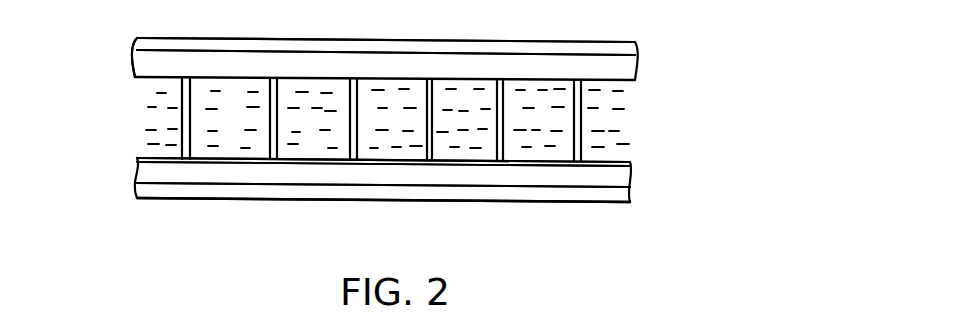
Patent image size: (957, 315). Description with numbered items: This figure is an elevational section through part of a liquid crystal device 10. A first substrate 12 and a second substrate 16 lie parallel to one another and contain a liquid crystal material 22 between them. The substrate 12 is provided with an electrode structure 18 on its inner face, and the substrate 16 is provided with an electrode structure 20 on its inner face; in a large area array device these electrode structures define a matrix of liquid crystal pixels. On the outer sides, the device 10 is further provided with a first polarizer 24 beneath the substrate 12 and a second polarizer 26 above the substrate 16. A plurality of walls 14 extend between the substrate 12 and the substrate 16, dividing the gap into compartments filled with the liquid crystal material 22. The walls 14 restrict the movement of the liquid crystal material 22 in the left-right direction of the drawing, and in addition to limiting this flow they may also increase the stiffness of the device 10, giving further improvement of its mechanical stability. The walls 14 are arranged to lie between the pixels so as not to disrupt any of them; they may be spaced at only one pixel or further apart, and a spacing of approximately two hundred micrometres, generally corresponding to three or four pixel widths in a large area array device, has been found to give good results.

The device 10 is at (662, 21).
The first substrate 12 is at (632, 173).
The walls 14 is at (186, 145).
The second substrate 16 is at (641, 79).
The electrode structure 18 is at (135, 157).
The electrode structure 20 is at (133, 77).
The liquid crystal material 22 is at (150, 125).
The first polarizer 24 is at (628, 198).
The second polarizer 26 is at (641, 48).